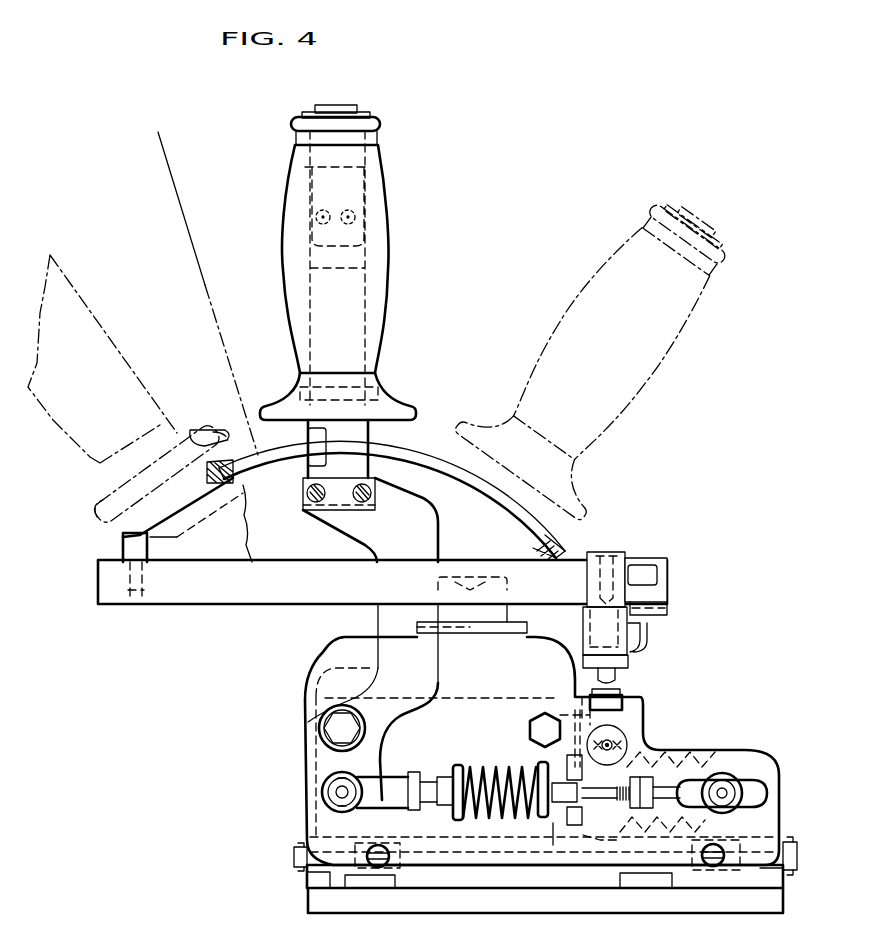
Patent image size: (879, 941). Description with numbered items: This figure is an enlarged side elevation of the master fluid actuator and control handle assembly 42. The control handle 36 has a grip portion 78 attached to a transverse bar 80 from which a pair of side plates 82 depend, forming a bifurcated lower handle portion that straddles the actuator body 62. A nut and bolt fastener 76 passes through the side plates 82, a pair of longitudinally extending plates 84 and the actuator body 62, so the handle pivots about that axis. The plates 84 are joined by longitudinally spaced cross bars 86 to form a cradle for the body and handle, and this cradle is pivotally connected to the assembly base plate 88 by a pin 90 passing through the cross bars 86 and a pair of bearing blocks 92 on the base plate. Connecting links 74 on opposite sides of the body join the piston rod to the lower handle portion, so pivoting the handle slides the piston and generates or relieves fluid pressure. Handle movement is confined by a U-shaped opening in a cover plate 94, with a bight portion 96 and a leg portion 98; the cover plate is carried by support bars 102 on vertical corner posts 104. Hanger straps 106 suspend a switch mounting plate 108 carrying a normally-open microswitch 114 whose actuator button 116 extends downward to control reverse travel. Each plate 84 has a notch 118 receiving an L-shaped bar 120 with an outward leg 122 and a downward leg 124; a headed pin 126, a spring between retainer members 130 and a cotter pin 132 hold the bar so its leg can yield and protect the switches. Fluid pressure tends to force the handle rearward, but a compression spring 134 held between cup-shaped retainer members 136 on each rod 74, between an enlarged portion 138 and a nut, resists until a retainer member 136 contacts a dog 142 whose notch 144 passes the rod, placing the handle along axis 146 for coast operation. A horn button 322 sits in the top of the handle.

The control handle 36 is at (347, 273).
The actuator assembly 42 is at (221, 742).
The actuator body 62 is at (356, 758).
The connecting links 74 is at (544, 808).
The nut and bolt fastener 76 is at (320, 725).
The grip portion 78 is at (290, 226).
The transverse bar 80 is at (327, 508).
The side plates 82 is at (428, 541).
The longitudinally extending plates 84 is at (638, 713).
The cross bars 86 is at (400, 875).
The assembly base plate 88 is at (537, 900).
The pin 90 is at (295, 855).
The bearing blocks 92 is at (318, 880).
The cover plate 94 is at (245, 531).
The bight portion 96 is at (219, 448).
The leg portion 98 is at (423, 454).
The support bars 102 is at (190, 604).
The corner posts 104 is at (668, 613).
The hanger straps 106 is at (600, 620).
The switch mounting plate 108 is at (643, 650).
The microswitch 114 is at (587, 637).
The actuator button 116 is at (620, 692).
The notch 118 is at (597, 692).
The L-shaped bar 120 is at (577, 688).
The leg 122 is at (648, 695).
The leg 124 is at (558, 712).
The headed pin 126 is at (608, 743).
The retainer members 130 is at (613, 742).
The cotter pin 132 is at (617, 753).
The compression springs 134 is at (490, 768).
The cup-shaped retainer members 136 is at (455, 770).
The enlarged portion 138 is at (563, 806).
The dog 142 is at (582, 826).
The notch 144 is at (583, 775).
The axis 146 is at (181, 172).
The horn button 322 is at (336, 105).